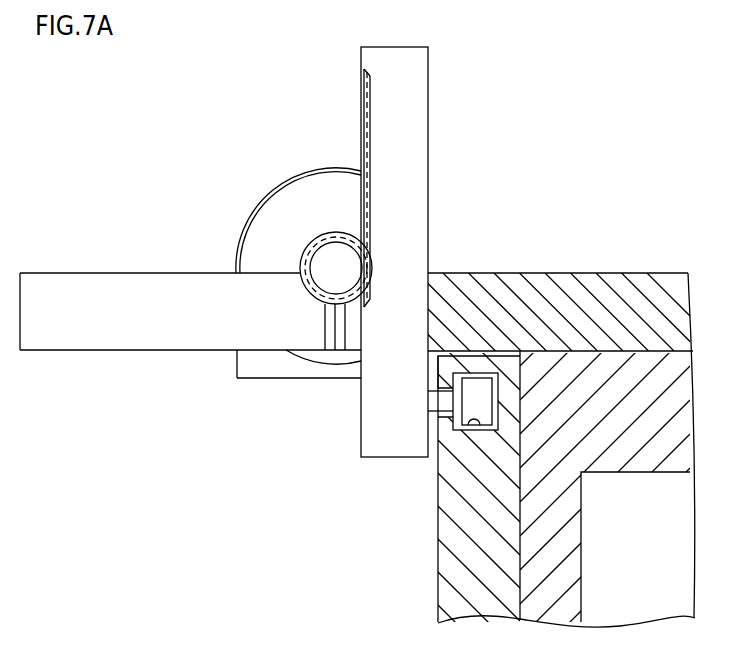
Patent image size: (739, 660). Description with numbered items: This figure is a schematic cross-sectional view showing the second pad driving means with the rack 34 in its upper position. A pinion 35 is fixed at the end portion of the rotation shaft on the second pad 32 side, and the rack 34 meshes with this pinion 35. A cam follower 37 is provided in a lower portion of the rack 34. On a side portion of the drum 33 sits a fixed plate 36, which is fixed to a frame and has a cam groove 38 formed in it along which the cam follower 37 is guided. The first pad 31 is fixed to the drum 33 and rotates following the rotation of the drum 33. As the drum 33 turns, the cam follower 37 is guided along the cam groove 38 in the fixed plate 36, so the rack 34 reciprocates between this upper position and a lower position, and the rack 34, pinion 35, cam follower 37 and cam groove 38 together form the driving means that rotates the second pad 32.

The first pad 31 is at (526, 290).
The second pad 32 is at (98, 273).
The drum 33 is at (540, 601).
The rack 34 is at (416, 86).
The pinion 35 is at (310, 242).
The fixed plate 36 is at (450, 578).
The cam follower 37 is at (462, 416).
The cam groove 38 is at (473, 405).